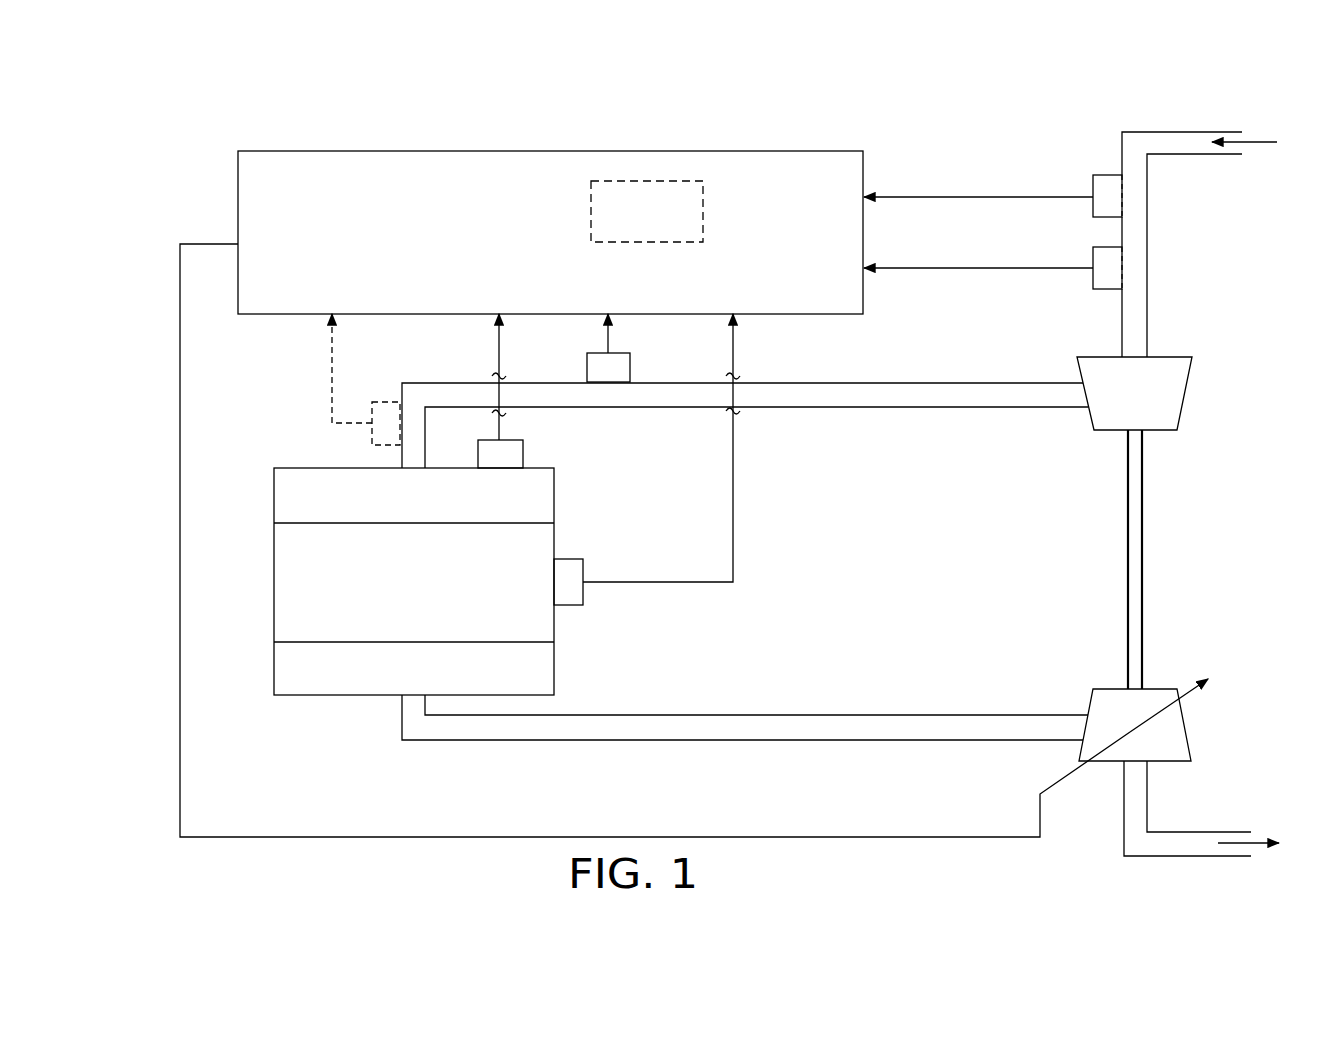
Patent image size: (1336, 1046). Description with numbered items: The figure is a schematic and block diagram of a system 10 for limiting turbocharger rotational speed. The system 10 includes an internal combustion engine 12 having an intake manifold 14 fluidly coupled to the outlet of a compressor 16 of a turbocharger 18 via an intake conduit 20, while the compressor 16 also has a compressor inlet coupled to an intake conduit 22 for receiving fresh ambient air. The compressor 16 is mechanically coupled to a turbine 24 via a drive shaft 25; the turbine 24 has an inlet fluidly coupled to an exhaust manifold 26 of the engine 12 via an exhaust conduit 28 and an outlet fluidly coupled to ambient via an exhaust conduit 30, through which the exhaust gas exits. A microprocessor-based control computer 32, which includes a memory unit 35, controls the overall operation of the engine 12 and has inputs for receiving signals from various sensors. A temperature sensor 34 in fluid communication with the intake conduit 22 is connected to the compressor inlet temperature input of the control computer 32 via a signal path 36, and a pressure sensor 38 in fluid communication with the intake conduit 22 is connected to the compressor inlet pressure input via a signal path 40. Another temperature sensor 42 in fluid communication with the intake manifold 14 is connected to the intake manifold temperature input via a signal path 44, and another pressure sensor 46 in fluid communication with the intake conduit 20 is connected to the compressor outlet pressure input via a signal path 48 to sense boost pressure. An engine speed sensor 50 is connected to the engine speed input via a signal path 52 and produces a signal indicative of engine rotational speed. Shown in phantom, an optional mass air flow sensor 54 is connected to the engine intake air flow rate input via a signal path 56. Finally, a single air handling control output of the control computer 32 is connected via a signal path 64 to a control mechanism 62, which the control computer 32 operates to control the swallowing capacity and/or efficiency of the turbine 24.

The system for limiting turbocharger rotational speed 10 is at (154, 158).
The internal combustion engine 12 is at (556, 628).
The intake manifold 14 is at (310, 468).
The compressor 16 is at (1180, 421).
The turbocharger 18 is at (1202, 553).
The intake conduit 20 is at (1000, 408).
The intake conduit 22 is at (1150, 302).
The turbine 24 is at (1191, 722).
The drive shaft 25 is at (1125, 500).
The exhaust manifold 26 is at (322, 697).
The exhaust conduit 28 is at (895, 715).
The exhaust conduit 30 is at (1186, 858).
The control computer 32 is at (790, 150).
The temperature sensor 34 is at (1100, 175).
The memory unit 35 is at (703, 215).
The signal path 36 is at (930, 195).
The pressure sensor 38 is at (1093, 255).
The signal path 40 is at (910, 267).
The temperature sensor 42 is at (524, 455).
The signal path 44 is at (496, 340).
The pressure sensor 46 is at (632, 366).
The signal path 48 is at (605, 345).
The engine speed sensor 50 is at (568, 559).
The signal path 52 is at (735, 470).
The mass air flow sensor 54 is at (380, 402).
The signal path 56 is at (331, 370).
The control mechanism 62 is at (1185, 690).
The signal path 64 is at (795, 835).